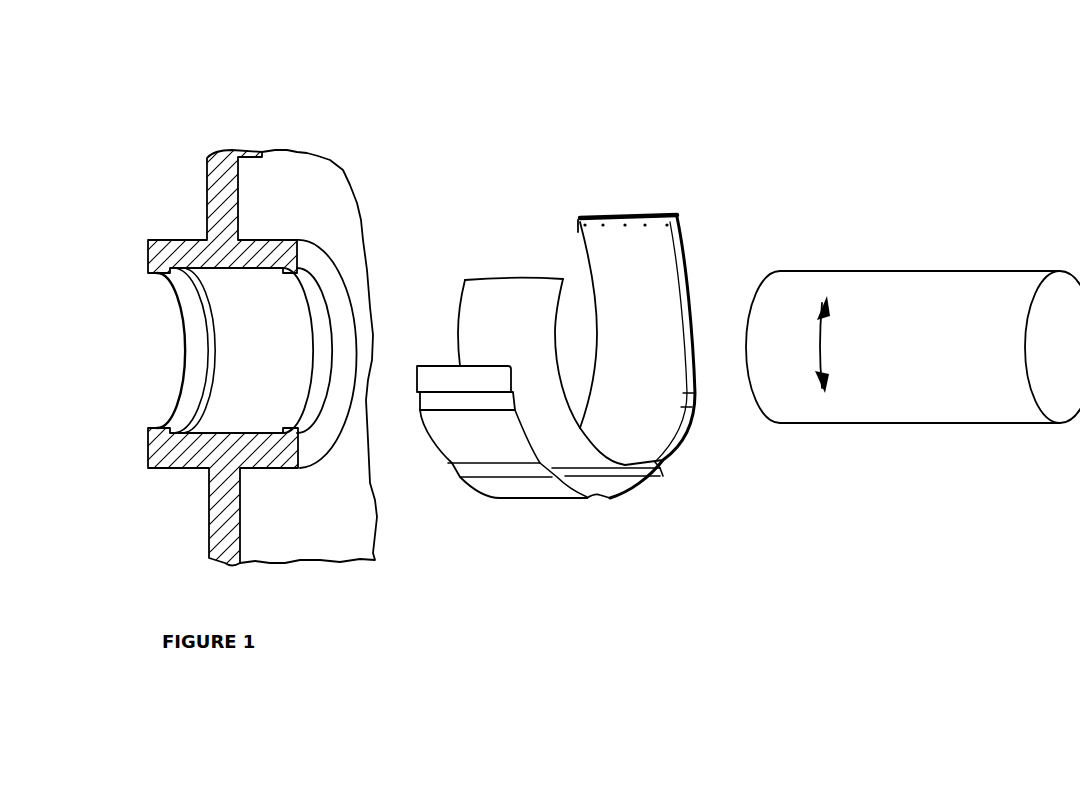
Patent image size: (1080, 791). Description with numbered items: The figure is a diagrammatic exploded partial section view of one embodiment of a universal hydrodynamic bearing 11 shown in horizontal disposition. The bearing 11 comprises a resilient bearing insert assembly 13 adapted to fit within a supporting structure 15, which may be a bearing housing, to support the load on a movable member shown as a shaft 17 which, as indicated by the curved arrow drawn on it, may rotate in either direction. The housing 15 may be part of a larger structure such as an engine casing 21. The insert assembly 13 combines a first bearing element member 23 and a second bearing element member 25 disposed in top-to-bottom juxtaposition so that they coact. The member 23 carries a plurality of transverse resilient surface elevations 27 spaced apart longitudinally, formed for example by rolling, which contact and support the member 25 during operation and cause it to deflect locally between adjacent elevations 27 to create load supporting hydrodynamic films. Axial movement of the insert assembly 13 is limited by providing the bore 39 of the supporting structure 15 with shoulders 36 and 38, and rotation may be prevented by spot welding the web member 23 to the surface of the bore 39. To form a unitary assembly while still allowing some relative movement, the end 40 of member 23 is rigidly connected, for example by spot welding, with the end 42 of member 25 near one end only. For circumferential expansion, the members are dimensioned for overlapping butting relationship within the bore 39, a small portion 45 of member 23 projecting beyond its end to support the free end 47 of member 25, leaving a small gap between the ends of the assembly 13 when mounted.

The hydrodynamic bearing 11 is at (840, 131).
The resilient bearing insert assembly 13 is at (692, 120).
The supporting structure 15 is at (180, 240).
The shaft 17 is at (967, 271).
The engine casing 21 is at (255, 153).
The first bearing element member 23 is at (633, 487).
The second bearing element member 25 is at (460, 303).
The resilient surface elevations 27 is at (660, 472).
The shoulder 36 is at (198, 373).
The shoulder 38 is at (313, 403).
The bore 39 is at (232, 304).
The end of first bearing element member 40 is at (662, 215).
The end of second bearing element member 42 is at (580, 228).
The projecting portion 45 is at (580, 220).
The free end of second bearing element member 47 is at (495, 280).